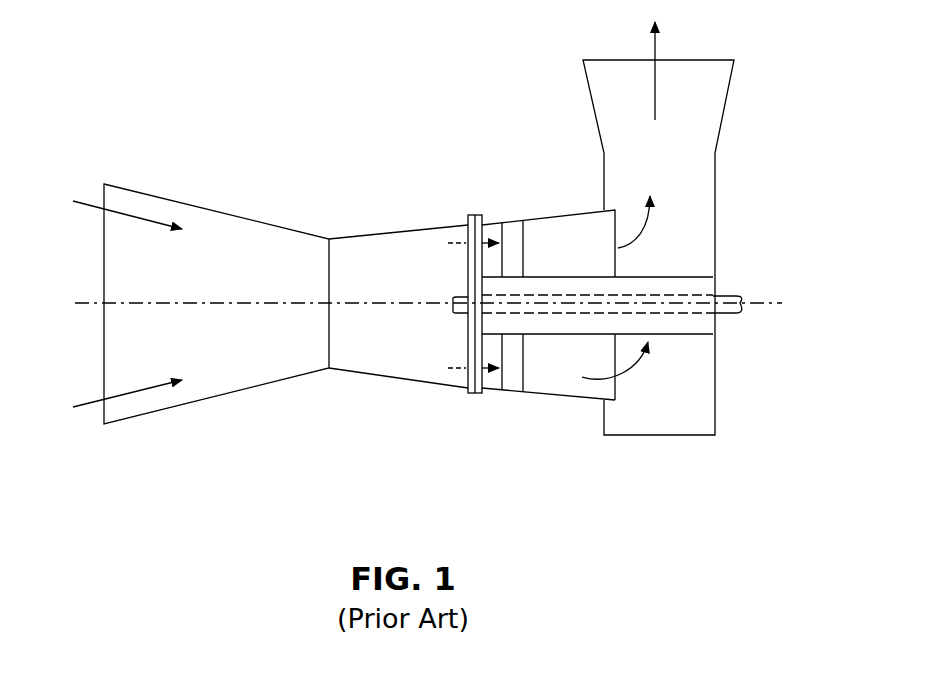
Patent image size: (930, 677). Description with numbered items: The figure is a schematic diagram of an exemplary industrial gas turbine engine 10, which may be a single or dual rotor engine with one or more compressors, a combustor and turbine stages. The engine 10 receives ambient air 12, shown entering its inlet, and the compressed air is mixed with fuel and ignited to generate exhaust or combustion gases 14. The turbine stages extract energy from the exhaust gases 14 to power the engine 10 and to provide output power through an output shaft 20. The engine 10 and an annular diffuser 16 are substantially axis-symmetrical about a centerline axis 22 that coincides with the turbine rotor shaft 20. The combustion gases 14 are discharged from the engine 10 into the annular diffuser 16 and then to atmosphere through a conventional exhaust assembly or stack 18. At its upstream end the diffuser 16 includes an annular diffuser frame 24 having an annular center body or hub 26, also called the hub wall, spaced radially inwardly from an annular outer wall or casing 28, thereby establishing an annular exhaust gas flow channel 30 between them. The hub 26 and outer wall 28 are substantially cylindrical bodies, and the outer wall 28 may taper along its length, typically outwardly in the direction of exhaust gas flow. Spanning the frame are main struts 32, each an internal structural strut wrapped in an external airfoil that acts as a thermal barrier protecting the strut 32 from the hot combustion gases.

The industrial gas turbine engine 10 is at (275, 224).
The ambient air 12 is at (90, 210).
The exhaust or combustion gases 14 is at (488, 223).
The annular diffuser 16 is at (512, 215).
The exhaust assembly or stack 18 is at (715, 185).
The output shaft 20 is at (727, 316).
The centerline axis 22 is at (245, 305).
The annular diffuser frame 24 is at (570, 208).
The center body or hub 26 is at (547, 277).
The outer wall or casing 28 is at (540, 385).
The annular exhaust gas flow channel 30 is at (554, 359).
The main strut 32 is at (512, 375).